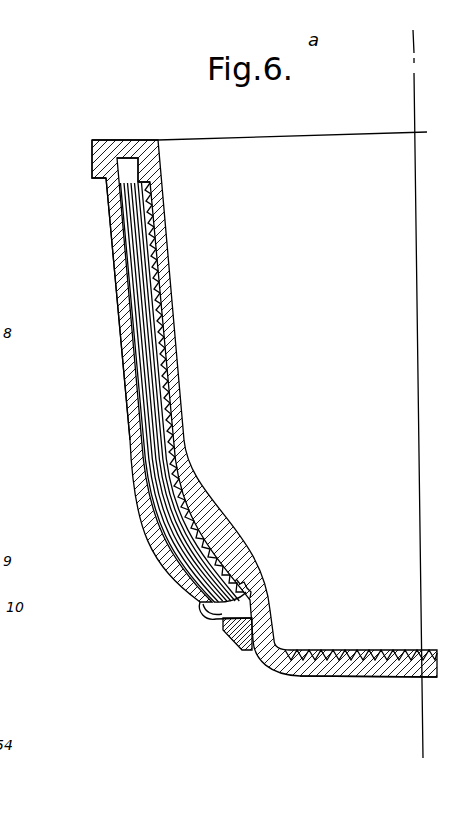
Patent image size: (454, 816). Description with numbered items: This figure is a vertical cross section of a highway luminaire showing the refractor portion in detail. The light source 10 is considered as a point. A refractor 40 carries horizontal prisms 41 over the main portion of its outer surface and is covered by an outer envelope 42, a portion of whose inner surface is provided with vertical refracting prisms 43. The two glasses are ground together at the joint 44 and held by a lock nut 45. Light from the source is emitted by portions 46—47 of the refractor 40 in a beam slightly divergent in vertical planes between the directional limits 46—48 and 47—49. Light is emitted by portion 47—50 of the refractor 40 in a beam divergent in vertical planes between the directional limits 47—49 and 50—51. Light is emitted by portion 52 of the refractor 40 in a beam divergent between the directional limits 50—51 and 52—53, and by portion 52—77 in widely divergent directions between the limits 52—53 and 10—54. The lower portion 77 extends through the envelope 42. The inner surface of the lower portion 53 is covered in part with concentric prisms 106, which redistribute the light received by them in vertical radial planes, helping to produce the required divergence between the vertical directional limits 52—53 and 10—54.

The light source 10 is at (200, 597).
The refractor 40 is at (158, 282).
The horizontal prisms 41 is at (157, 312).
The outer envelope 42 is at (115, 250).
The vertical refracting prisms 43 is at (139, 378).
The joint 44 is at (93, 158).
The lock nut 45 is at (237, 637).
The refractor portion limit 46 is at (158, 184).
The refractor portion limit 47 is at (170, 470).
The directional limit point 48 is at (140, 185).
The directional limit point 49 is at (130, 473).
The refractor portion limit 50 is at (220, 535).
The directional limit point 51 is at (240, 536).
The refractor portion 52 is at (236, 578).
The lower portion 53 is at (222, 590).
The directional limit point 54 is at (396, 746).
The lower portion 77 is at (307, 672).
The concentric prisms 106 is at (349, 649).